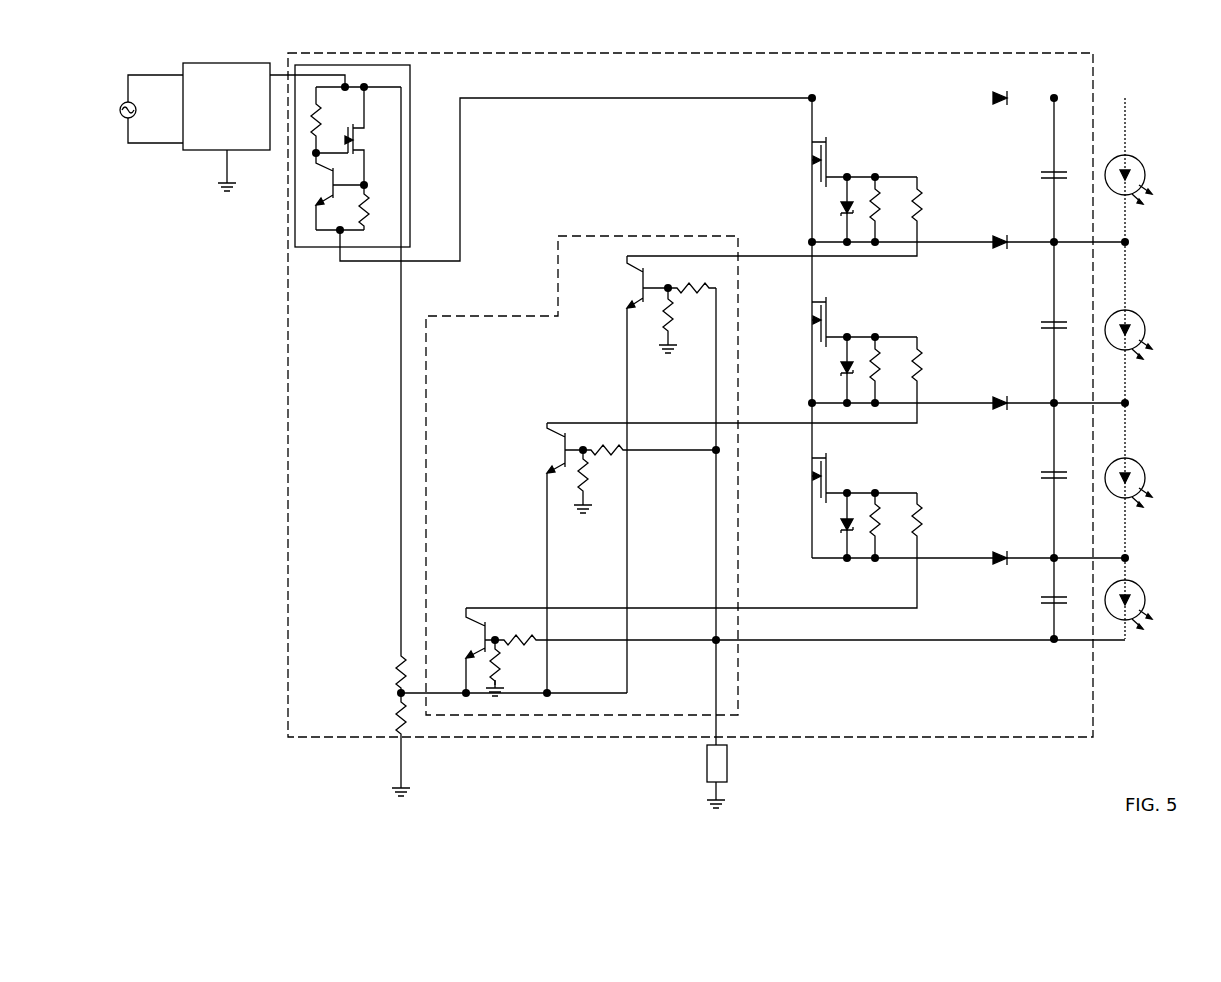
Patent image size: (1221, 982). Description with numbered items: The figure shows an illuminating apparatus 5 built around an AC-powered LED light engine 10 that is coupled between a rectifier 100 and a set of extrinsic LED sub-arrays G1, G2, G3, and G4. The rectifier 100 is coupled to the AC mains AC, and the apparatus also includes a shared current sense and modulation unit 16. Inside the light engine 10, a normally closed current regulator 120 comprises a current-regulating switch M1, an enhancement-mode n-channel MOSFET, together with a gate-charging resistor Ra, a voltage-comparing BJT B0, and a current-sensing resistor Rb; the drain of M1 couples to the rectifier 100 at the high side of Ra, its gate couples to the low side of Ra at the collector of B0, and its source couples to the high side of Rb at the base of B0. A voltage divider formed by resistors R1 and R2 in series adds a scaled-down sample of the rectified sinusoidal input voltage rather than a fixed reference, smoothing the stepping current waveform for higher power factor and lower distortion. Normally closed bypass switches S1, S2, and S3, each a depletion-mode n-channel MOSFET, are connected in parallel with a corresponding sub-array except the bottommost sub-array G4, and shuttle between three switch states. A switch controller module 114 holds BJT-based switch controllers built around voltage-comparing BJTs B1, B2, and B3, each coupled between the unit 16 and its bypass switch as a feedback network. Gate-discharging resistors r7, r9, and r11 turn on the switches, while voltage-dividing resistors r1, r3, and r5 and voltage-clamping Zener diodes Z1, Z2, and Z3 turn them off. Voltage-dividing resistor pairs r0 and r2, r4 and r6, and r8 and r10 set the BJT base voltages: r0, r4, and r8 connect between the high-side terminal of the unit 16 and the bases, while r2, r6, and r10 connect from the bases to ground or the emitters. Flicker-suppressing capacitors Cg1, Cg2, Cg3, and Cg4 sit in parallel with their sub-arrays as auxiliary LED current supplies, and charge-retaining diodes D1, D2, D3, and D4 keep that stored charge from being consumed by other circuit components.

The illuminating apparatus 5 is at (151, 91).
The rectifier 100 is at (212, 120).
The AC-powered LED light engine 10 is at (1093, 82).
The normally closed current regulator 120 is at (410, 68).
The switch controller module 114 is at (620, 236).
The shared current sense and modulation unit 16 is at (727, 770).
The AC mains AC is at (151, 109).
The gate-charging resistor Ra is at (331, 120).
The current-sensing resistor Rb is at (378, 207).
The current-regulating switch M1 is at (358, 136).
The voltage-comparing BJT B0 is at (331, 191).
The resistor R1 is at (387, 672).
The resistor R2 is at (389, 744).
The voltage-comparing BJT B1 is at (633, 474).
The voltage-comparing BJT B2 is at (550, 558).
The voltage-comparing BJT B3 is at (467, 650).
The voltage-dividing resistor r0 is at (692, 277).
The voltage-dividing resistor r2 is at (679, 320).
The voltage-dividing resistor r4 is at (649, 439).
The voltage-dividing resistor r6 is at (591, 481).
The voltage-dividing resistor r8 is at (810, 629).
The voltage-dividing resistor r10 is at (511, 668).
The normally closed bypass switch S1 is at (848, 162).
The normally closed bypass switch S2 is at (848, 322).
The normally closed bypass switch S3 is at (848, 478).
The voltage-clamping Zener diode Z1 is at (836, 209).
The voltage-clamping Zener diode Z2 is at (836, 370).
The voltage-clamping Zener diode Z3 is at (836, 525).
The voltage-dividing resistor r1 is at (785, 216).
The voltage-dividing resistor r3 is at (745, 380).
The voltage-dividing resistor r5 is at (706, 550).
The gate-discharging resistor r7 is at (887, 209).
The gate-discharging resistor r9 is at (887, 370).
The gate-discharging resistor r11 is at (891, 525).
The charge-retaining diode D1 is at (1005, 114).
The charge-retaining diode D2 is at (1005, 258).
The charge-retaining diode D3 is at (1005, 419).
The charge-retaining diode D4 is at (1005, 548).
The flicker-suppressing capacitor Cg1 is at (1034, 176).
The flicker-suppressing capacitor Cg2 is at (1034, 326).
The flicker-suppressing capacitor Cg3 is at (1034, 476).
The flicker-suppressing capacitor Cg4 is at (1034, 601).
The extrinsic LED sub-array G1 is at (1151, 179).
The extrinsic LED sub-array G2 is at (1151, 334).
The extrinsic LED sub-array G3 is at (1151, 482).
The extrinsic LED sub-array G4 is at (1151, 604).